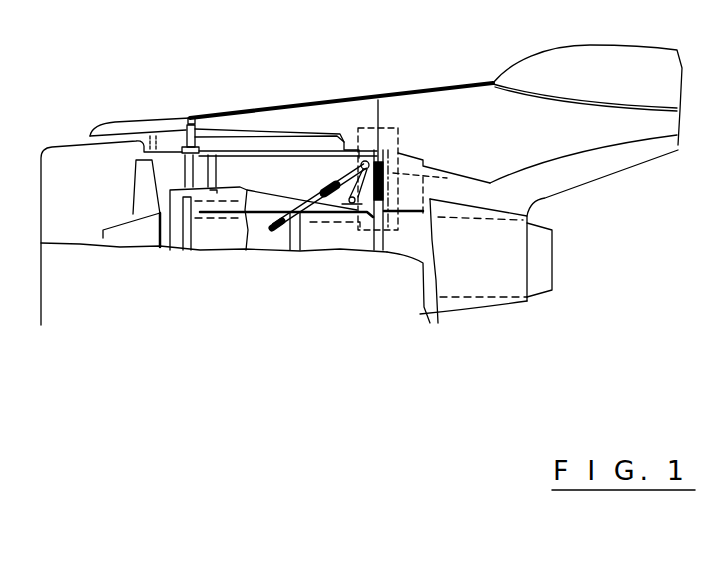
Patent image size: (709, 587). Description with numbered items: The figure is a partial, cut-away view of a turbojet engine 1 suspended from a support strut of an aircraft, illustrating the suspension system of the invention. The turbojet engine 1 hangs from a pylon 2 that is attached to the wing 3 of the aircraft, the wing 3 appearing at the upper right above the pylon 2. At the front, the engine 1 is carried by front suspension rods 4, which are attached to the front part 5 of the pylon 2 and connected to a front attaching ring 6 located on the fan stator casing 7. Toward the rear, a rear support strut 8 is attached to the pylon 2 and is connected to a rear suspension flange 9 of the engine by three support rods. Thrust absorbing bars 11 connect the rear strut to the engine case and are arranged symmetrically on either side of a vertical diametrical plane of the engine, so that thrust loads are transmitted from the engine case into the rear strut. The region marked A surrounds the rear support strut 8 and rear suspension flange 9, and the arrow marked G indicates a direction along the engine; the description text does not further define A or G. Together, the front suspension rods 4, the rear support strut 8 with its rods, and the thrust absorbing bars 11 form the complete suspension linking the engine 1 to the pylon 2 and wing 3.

The turbojet engine 1 is at (470, 283).
The pylon 2 is at (463, 110).
The wing 3 is at (618, 62).
The front suspension rods 4 is at (187, 133).
The front part 5 is at (188, 118).
The front attaching ring 6 is at (183, 152).
The fan stator casing 7 is at (220, 155).
The rear support strut 8 is at (378, 162).
The rear suspension flange 9 is at (378, 250).
The thrust absorbing bars 11 is at (303, 250).
The detail region A is at (397, 137).
The gas flow direction G is at (440, 190).